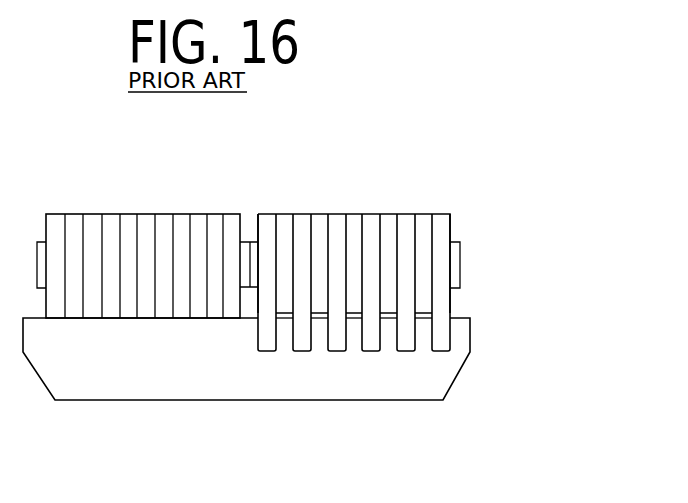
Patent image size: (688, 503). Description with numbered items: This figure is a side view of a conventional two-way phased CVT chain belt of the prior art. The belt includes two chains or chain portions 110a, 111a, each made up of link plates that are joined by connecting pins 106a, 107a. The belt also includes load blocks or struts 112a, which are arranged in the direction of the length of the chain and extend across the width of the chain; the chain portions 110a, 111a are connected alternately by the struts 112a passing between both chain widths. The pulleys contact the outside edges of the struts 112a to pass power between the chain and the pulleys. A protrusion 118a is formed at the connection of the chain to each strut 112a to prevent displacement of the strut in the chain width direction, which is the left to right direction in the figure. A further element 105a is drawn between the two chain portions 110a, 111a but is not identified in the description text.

The connecting bridge between fin sections 105a is at (240, 188).
The left end tab 106a is at (40, 258).
The right end tab 107a is at (453, 259).
The first fin section 110a is at (150, 198).
The second fin section 111a is at (345, 206).
The base 112a is at (441, 381).
The extended fins 118a is at (281, 346).